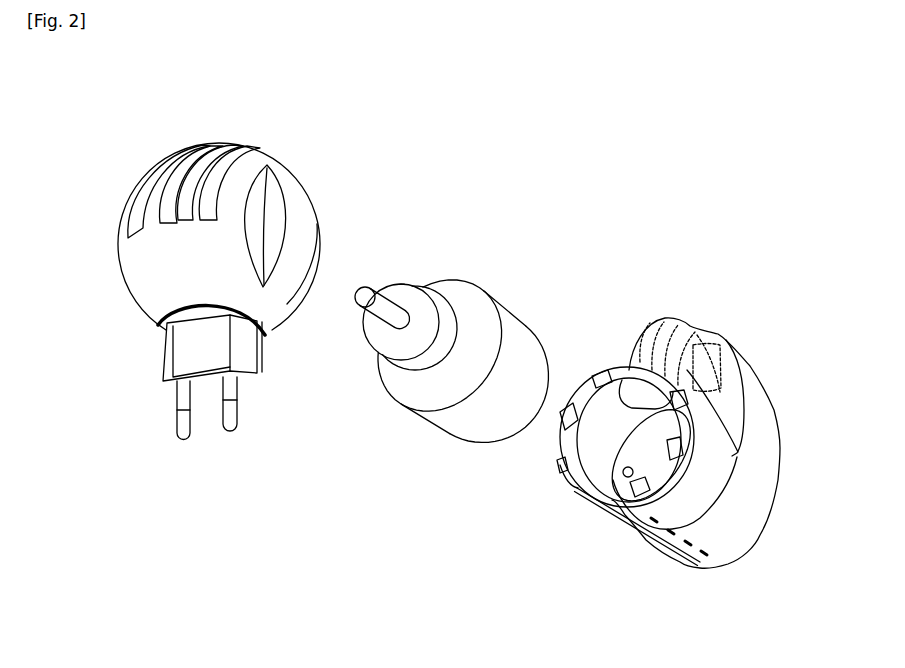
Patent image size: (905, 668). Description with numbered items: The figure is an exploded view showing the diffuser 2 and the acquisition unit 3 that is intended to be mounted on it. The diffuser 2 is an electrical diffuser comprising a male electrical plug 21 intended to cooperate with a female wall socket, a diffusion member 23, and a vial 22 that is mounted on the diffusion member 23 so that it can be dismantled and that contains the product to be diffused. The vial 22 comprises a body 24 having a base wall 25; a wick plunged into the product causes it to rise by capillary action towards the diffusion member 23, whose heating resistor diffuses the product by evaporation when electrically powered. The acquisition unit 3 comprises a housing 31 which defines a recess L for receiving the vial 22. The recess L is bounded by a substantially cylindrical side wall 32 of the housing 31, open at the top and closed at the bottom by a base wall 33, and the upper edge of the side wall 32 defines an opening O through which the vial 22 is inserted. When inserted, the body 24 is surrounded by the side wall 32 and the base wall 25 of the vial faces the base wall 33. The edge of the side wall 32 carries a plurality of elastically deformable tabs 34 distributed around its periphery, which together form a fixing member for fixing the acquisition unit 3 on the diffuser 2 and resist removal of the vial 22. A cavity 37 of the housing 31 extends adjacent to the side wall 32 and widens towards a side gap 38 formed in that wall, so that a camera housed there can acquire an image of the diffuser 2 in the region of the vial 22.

The diffuser 2 is at (404, 168).
The male electrical plug 21 is at (163, 378).
The vial 22 is at (465, 280).
The diffusion member 23 is at (138, 262).
The body 24 is at (457, 423).
The base wall 25 is at (380, 292).
The acquisition unit 3 is at (759, 378).
The housing 31 is at (736, 543).
The side wall 32 is at (627, 520).
The base wall 33 is at (660, 429).
The elastically deformable tabs 34 is at (687, 457).
The cavity 37 is at (662, 345).
The side gap 38 is at (624, 372).
The opening O is at (577, 462).
The recess L is at (583, 493).